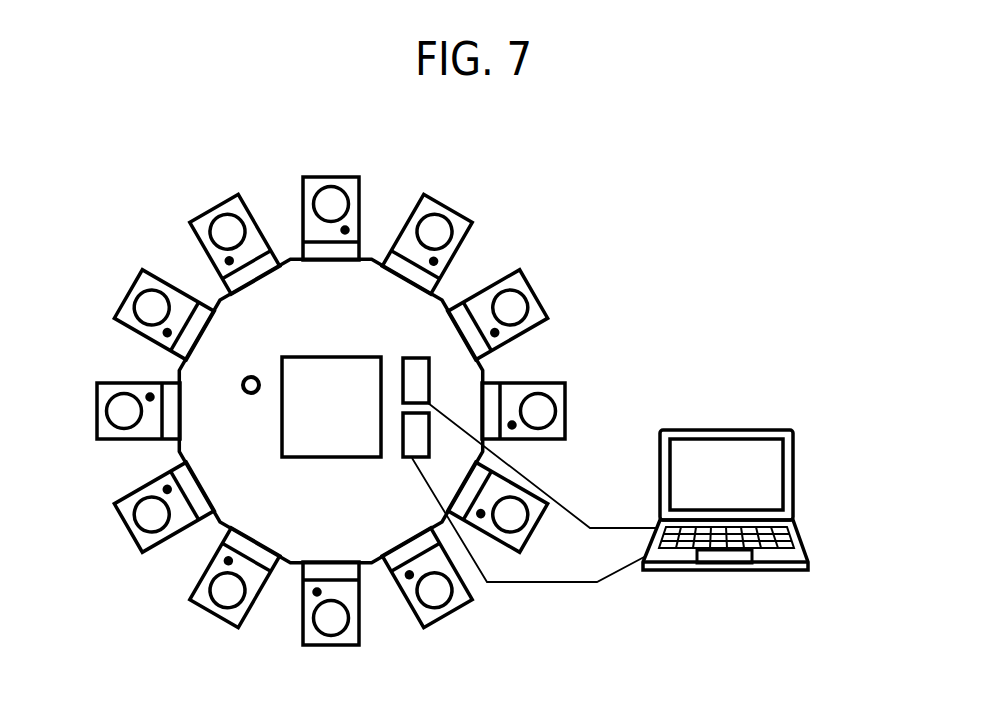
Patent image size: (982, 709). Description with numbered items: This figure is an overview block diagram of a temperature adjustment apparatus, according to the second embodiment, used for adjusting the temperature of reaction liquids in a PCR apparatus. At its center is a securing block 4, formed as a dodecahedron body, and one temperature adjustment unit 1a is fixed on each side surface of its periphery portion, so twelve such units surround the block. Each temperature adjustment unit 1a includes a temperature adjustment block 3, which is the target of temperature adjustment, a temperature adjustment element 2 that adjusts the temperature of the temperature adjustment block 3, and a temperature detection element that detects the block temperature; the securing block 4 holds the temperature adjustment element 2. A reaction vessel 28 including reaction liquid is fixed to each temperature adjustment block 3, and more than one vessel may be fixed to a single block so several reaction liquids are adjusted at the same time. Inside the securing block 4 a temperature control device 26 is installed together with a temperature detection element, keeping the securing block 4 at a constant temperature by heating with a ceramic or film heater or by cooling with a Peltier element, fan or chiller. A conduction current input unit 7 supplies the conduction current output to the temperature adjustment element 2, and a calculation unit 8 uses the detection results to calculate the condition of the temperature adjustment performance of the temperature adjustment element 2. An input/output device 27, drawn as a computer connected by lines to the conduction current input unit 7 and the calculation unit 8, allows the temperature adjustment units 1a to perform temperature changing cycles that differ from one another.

The temperature adjustment unit 1a is at (182, 215).
The temperature adjustment element 2 is at (302, 242).
The temperature adjustment block 3 is at (362, 187).
The reaction vessel 28 is at (382, 176).
The securing block 4 is at (446, 294).
The temperature control device 26 is at (327, 357).
The conduction current input unit 7 is at (407, 357).
The calculation unit 8 is at (409, 457).
The input/output device 27 is at (783, 430).